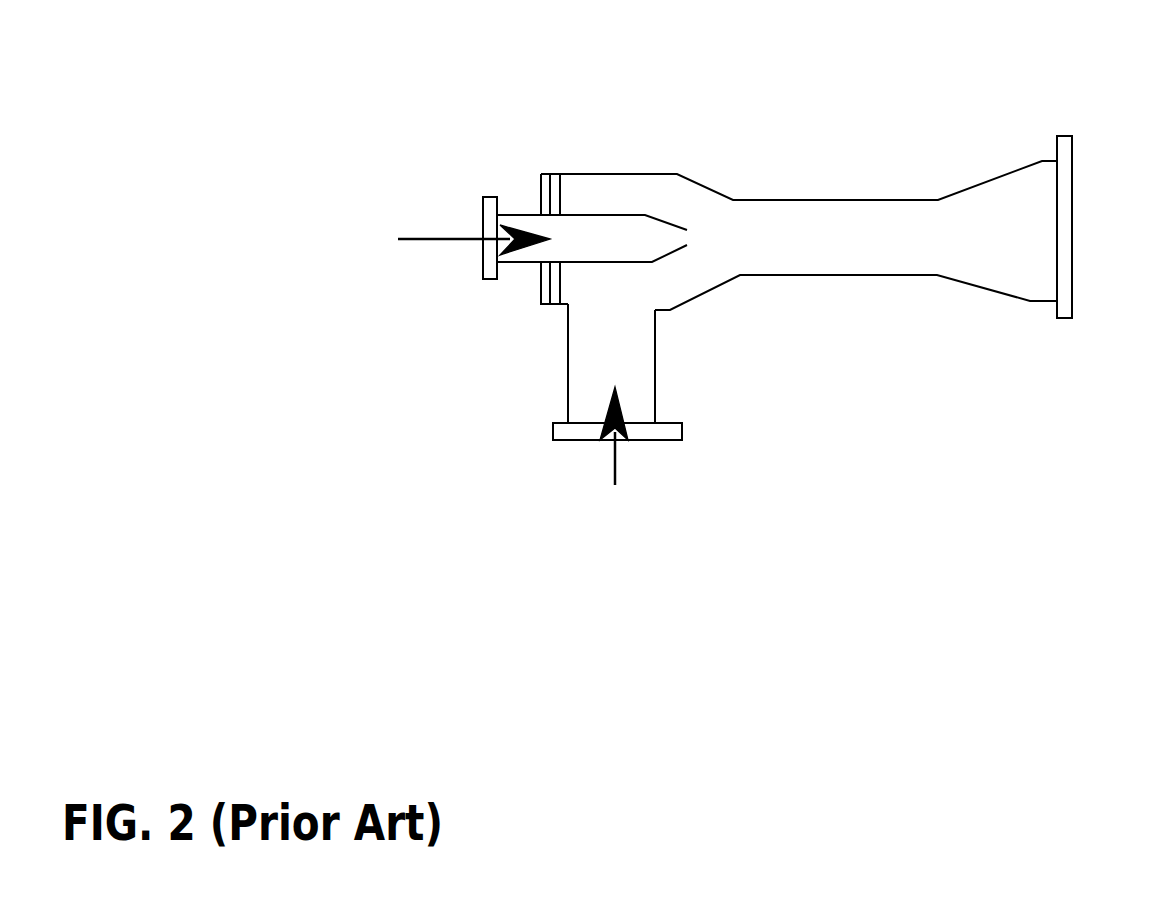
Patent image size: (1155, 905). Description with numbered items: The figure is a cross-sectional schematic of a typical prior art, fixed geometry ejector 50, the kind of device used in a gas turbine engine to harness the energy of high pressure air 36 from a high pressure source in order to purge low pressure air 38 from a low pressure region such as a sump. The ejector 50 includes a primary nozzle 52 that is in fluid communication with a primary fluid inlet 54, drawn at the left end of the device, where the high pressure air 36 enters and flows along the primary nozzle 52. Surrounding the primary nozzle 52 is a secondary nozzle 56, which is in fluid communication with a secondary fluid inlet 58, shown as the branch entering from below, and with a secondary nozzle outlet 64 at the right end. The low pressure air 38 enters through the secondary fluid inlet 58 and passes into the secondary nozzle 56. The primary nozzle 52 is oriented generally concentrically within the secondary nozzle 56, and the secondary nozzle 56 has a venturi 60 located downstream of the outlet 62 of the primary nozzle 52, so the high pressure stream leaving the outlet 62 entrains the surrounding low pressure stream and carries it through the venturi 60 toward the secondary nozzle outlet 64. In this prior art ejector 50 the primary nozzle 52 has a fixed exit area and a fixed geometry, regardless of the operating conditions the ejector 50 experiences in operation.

The fixed geometry ejector 50 is at (754, 278).
The high pressure air 36 is at (457, 240).
The low pressure air 38 is at (613, 450).
The primary nozzle 52 is at (645, 215).
The primary fluid inlet 54 is at (490, 279).
The secondary nozzle 56 is at (923, 276).
The secondary fluid inlet 58 is at (682, 430).
The venturi 60 is at (817, 200).
The outlet of the primary nozzle 62 is at (680, 264).
The secondary nozzle outlet 64 is at (1064, 318).